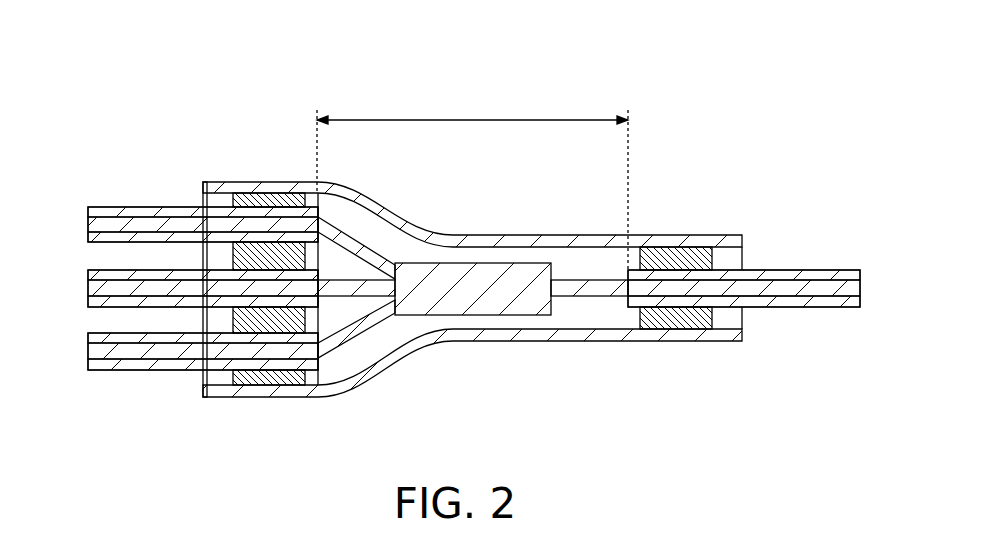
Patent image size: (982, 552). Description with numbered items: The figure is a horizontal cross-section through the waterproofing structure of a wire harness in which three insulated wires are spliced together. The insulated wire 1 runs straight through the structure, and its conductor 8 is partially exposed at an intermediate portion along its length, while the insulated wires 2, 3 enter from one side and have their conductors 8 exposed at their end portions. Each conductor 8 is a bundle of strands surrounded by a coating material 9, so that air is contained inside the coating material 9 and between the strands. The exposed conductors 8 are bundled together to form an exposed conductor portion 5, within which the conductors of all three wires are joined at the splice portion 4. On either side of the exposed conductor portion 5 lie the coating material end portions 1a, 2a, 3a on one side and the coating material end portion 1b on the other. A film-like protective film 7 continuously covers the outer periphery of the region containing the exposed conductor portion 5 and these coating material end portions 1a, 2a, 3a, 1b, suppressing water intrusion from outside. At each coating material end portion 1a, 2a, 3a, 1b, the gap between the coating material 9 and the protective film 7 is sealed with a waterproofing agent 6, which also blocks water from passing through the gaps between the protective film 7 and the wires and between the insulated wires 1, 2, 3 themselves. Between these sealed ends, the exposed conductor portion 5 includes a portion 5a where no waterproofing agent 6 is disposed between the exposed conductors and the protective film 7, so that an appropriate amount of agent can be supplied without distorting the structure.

The insulated wire 1 is at (116, 207).
The coating material end portion 1a is at (280, 207).
The coating material end portion 1b is at (687, 317).
The insulated wire 2 is at (102, 308).
The coating material end portion 2a is at (267, 312).
The insulated wire 3 is at (103, 370).
The coating material end portion 3a is at (278, 380).
The splice portion 4 is at (473, 303).
The exposed conductor portion 5 is at (472, 120).
The portion where the waterproofing agent is not disposed 5a is at (582, 313).
The waterproofing agent 6 is at (218, 248).
The protective film 7 is at (718, 341).
The conductor 8 is at (140, 207).
The coating material 9 is at (169, 207).